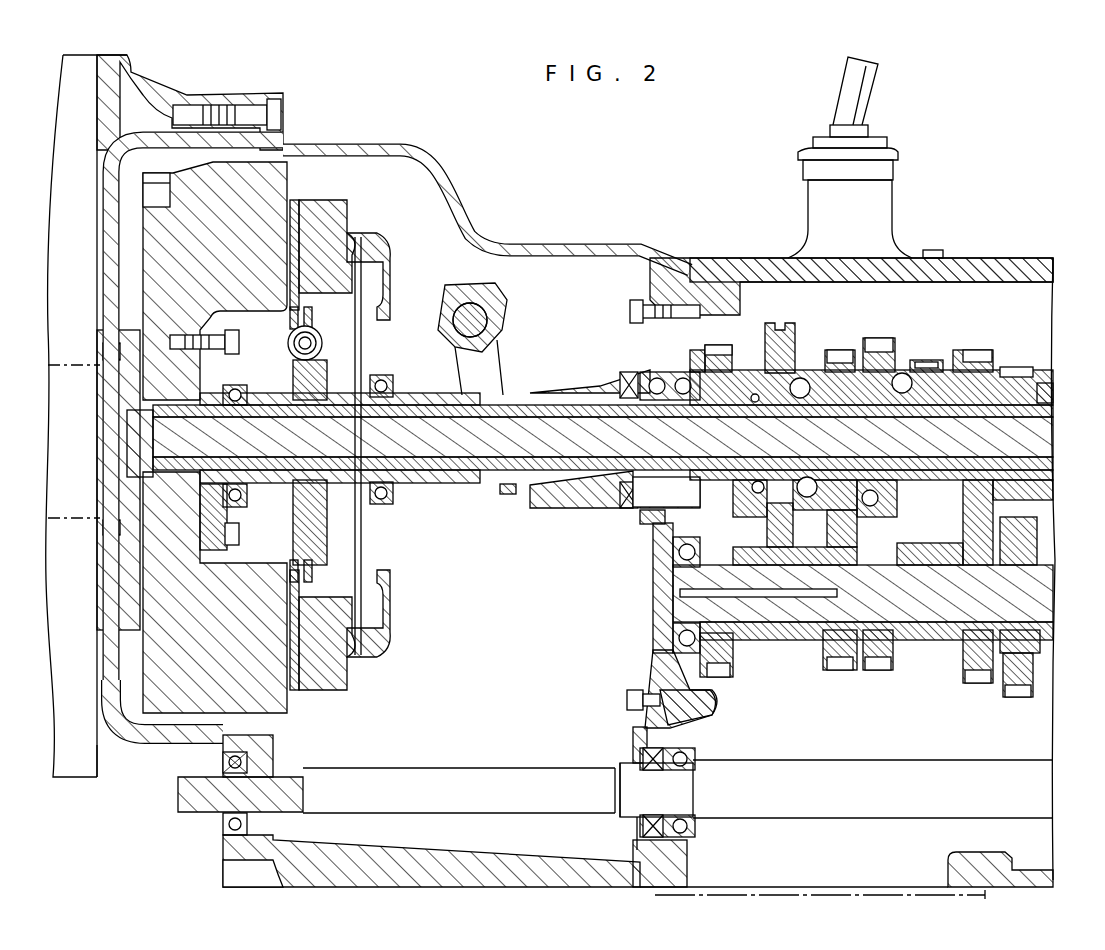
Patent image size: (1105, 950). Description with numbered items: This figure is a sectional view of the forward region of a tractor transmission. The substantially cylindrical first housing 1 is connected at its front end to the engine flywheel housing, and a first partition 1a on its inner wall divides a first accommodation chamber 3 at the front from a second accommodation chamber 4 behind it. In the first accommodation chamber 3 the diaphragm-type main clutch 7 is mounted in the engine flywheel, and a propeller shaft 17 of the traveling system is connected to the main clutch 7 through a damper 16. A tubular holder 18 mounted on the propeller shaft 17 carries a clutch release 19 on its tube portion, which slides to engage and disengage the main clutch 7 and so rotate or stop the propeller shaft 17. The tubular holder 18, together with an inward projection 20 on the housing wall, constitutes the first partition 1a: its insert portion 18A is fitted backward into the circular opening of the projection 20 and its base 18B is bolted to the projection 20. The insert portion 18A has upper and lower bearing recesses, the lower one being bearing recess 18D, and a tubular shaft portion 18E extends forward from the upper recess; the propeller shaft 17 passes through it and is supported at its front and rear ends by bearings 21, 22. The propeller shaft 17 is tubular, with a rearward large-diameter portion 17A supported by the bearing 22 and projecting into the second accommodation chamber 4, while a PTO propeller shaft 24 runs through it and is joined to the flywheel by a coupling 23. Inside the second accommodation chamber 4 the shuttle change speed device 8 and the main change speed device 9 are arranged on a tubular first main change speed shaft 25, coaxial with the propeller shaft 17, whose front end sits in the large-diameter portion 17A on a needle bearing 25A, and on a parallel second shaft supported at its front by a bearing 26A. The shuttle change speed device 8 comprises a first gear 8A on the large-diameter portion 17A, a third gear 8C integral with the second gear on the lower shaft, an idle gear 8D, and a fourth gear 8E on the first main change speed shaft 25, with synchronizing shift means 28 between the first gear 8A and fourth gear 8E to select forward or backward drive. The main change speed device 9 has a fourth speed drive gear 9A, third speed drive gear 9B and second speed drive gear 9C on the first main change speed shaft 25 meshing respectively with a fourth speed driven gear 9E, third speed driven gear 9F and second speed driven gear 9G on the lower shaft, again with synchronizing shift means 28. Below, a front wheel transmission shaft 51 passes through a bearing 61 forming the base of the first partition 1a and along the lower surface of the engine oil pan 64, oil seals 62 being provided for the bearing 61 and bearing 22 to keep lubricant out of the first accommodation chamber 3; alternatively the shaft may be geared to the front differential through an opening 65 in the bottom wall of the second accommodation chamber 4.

The first housing 1 is at (222, 862).
The first partition 1a is at (637, 847).
The first accommodation chamber 3 is at (494, 635).
The second accommodation chamber 4 is at (853, 845).
The main clutch 7 is at (380, 206).
The shuttle change speed device 8 is at (752, 320).
The first gear 8A is at (718, 345).
The third gear 8C is at (840, 670).
The idle gear 8D is at (720, 677).
The fourth gear 8E is at (840, 350).
The main change speed device 9 is at (972, 304).
The fourth speed drive gear 9A is at (882, 338).
The third speed drive gear 9B is at (985, 350).
The second speed drive gear 9C is at (1033, 367).
The fourth speed driven gear 9E is at (883, 670).
The third speed driven gear 9F is at (972, 683).
The second speed driven gear 9G is at (1022, 697).
The damper 16 is at (323, 344).
The propeller shaft 17 is at (417, 490).
The large-diameter portion 17A is at (590, 392).
The tubular holder 18 is at (556, 505).
The insert portion 18A is at (647, 300).
The base 18B is at (640, 718).
The bearing recess 18D is at (733, 652).
The tubular shaft portion 18E is at (511, 494).
The clutch release 19 is at (502, 290).
The inward projection 20 is at (700, 712).
The bearing 21 is at (241, 390).
The bearing 22 is at (650, 372).
The coupling 23 is at (224, 511).
The PTO propeller shaft 24 is at (450, 490).
The first main change speed shaft 25 is at (1050, 383).
The needle bearing 25A is at (633, 506).
The bearing 26A is at (660, 643).
The synchronizing shift means 28 is at (783, 323).
The front wheel transmission shaft 51 is at (485, 773).
The bearing 61 is at (263, 765).
The oil seal 62 is at (640, 753).
The engine oil pan 64 is at (98, 750).
The opening 65 is at (904, 882).